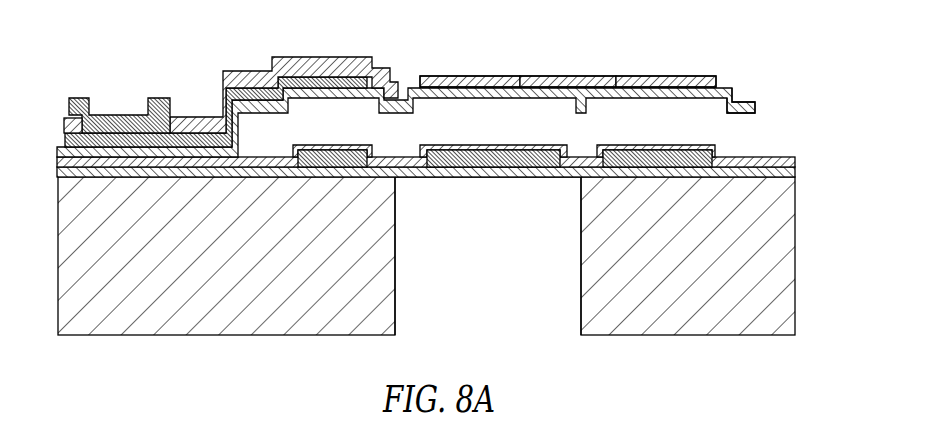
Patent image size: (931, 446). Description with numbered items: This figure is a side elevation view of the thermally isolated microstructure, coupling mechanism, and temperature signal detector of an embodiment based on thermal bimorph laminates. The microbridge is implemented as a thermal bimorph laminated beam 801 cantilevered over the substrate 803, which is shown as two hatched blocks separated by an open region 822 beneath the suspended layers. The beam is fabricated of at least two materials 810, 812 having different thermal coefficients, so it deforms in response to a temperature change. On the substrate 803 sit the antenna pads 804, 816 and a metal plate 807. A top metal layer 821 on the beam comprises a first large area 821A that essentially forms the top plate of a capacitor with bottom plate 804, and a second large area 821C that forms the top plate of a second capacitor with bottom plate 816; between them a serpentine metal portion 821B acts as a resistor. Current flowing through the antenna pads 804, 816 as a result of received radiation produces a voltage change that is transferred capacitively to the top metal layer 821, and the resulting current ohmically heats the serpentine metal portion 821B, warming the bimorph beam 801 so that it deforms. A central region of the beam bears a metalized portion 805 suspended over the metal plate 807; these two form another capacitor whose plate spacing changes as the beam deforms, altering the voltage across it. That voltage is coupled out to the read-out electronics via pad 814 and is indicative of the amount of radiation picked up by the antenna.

The thermal bimorph laminated beam 801 is at (436, 202).
The substrate 803 is at (108, 317).
The antenna pad 804 is at (498, 147).
The metalized portion 805 is at (352, 56).
The metal plate 807 is at (340, 145).
The bimorph material 810 is at (324, 55).
The bimorph material 812 is at (743, 115).
The pad 814 is at (119, 115).
The antenna pad 816 is at (650, 147).
The top metal layer 821 is at (415, 102).
The first large area 821A is at (470, 75).
The serpentine metal portion 821B is at (567, 75).
The second large area 821C is at (663, 75).
The cavity 822 is at (481, 179).